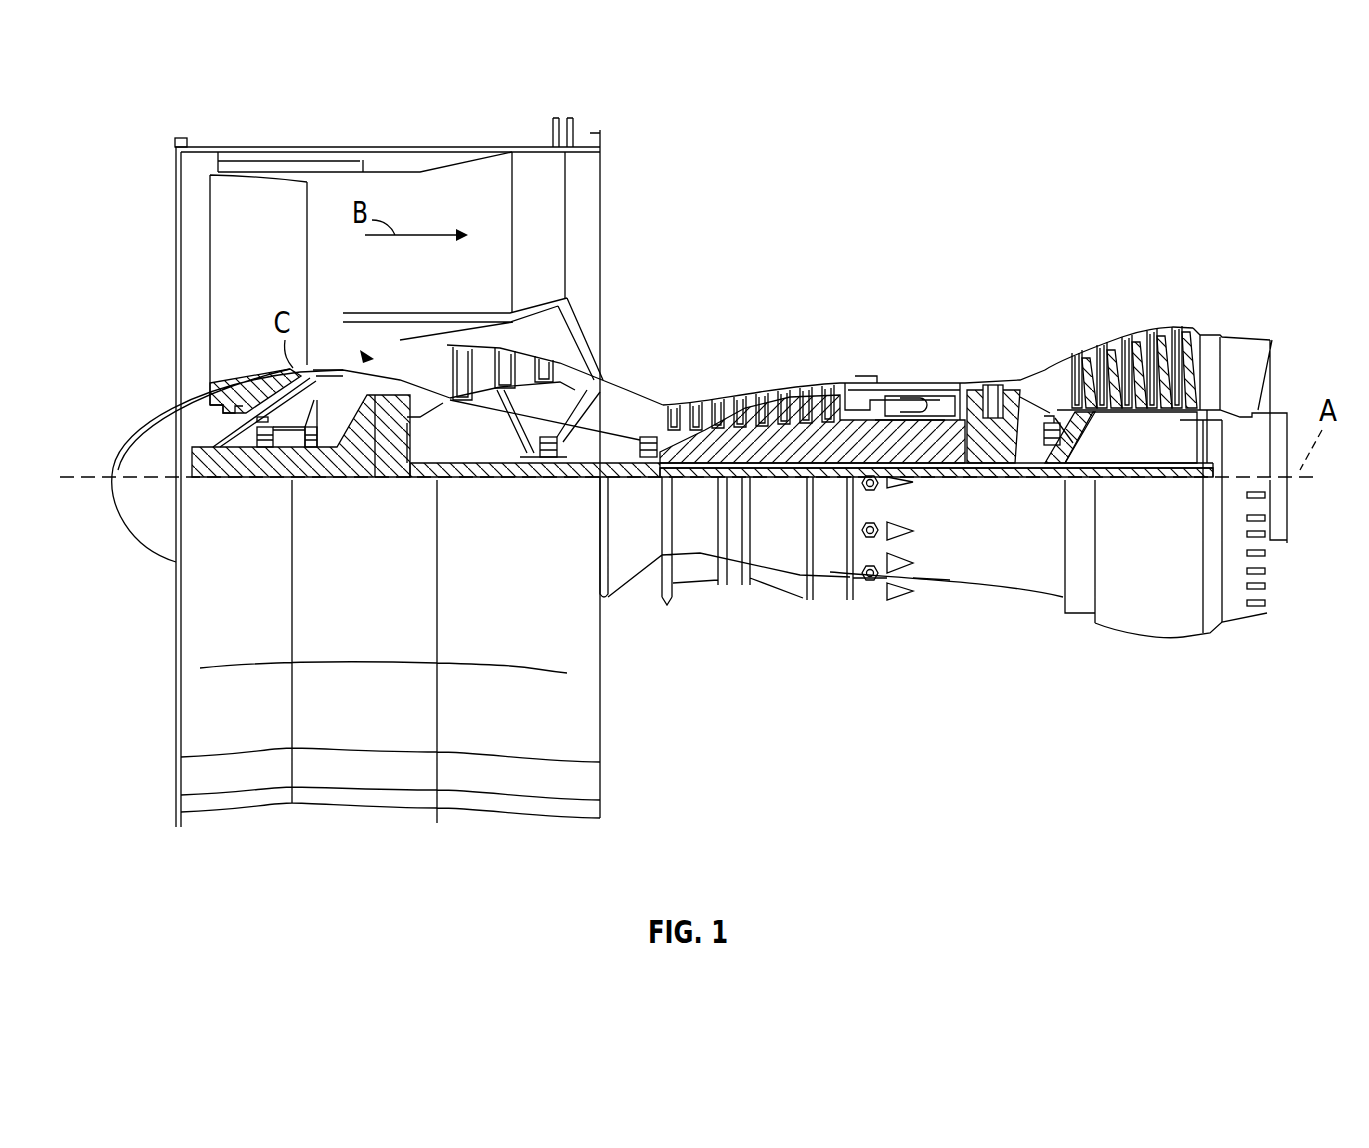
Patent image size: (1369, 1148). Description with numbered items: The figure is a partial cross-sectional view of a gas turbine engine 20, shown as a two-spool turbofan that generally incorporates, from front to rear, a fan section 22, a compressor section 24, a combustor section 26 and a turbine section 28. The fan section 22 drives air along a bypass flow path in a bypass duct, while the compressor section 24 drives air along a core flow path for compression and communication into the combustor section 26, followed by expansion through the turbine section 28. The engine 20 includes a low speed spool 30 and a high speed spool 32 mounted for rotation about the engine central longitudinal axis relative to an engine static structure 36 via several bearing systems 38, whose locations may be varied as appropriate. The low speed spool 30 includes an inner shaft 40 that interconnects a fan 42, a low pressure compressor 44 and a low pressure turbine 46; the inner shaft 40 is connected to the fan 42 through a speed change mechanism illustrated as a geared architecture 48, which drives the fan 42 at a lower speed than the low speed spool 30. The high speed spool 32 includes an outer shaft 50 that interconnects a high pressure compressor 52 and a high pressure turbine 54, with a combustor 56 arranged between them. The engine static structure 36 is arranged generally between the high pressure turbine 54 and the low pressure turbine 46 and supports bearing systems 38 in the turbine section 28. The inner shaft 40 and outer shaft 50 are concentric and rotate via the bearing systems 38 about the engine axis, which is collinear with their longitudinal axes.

The gas turbine engine 20 is at (1117, 165).
The fan section 22 is at (270, 126).
The compressor section 24 is at (737, 293).
The combustor section 26 is at (948, 298).
The turbine section 28 is at (1075, 298).
The low speed spool 30 is at (790, 492).
The high speed spool 32 is at (843, 428).
The engine static structure 36 is at (826, 593).
The bearing systems 38 is at (265, 450).
The inner shaft 40 is at (617, 478).
The fan 42 is at (233, 285).
The low pressure compressor 44 is at (527, 360).
The low pressure turbine 46 is at (1135, 348).
The geared architecture 48 is at (393, 450).
The outer shaft 50 is at (945, 468).
The high pressure compressor 52 is at (735, 405).
The high pressure turbine 54 is at (990, 387).
The combustor 56 is at (905, 406).